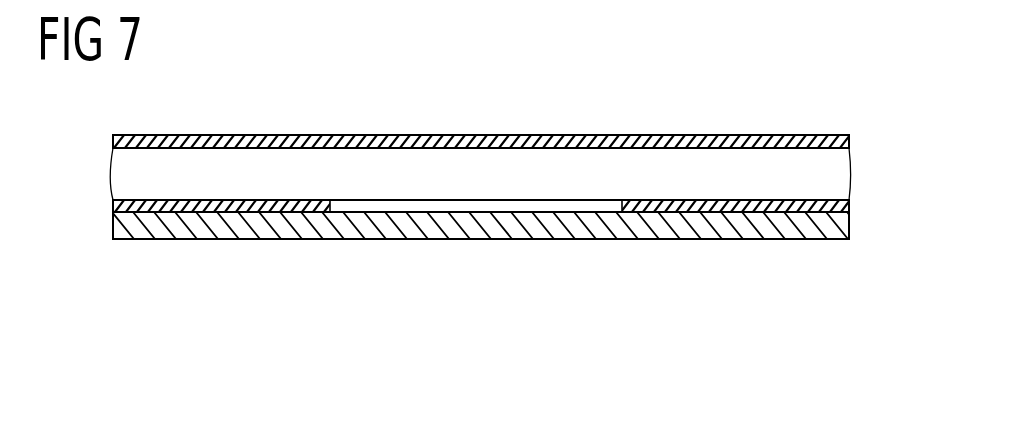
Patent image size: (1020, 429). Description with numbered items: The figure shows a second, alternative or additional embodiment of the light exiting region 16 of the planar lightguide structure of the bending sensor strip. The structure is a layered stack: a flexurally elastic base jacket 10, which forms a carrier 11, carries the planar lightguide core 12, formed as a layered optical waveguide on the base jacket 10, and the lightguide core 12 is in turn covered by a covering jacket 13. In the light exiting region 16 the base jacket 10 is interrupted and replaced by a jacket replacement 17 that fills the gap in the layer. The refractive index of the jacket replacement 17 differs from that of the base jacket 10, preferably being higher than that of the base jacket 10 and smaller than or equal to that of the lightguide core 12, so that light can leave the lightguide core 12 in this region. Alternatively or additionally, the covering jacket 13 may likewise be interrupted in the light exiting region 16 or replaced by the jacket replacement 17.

The base jacket 10 is at (845, 206).
The carrier 11 is at (843, 236).
The lightguide core 12 is at (840, 172).
The covering jacket 13 is at (813, 134).
The light exiting region 16 is at (506, 205).
The jacket replacement 17 is at (570, 203).